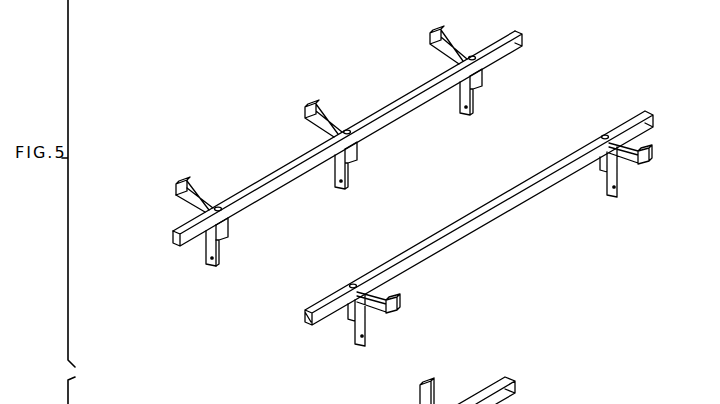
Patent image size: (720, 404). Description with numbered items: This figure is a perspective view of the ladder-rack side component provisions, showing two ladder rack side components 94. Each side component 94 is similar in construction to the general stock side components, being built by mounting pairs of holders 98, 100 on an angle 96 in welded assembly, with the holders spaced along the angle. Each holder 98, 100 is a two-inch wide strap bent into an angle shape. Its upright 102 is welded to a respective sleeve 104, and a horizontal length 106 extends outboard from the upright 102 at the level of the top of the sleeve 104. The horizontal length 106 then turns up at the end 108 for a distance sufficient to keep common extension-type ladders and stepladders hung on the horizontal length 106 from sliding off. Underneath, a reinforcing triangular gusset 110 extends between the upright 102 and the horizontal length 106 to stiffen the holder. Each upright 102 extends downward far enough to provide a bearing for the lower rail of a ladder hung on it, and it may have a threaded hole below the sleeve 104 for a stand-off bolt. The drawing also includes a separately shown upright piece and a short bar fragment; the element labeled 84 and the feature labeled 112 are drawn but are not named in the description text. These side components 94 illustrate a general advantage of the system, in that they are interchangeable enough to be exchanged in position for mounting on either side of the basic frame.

The upright plate 84 is at (430, 380).
The ladder rack side component 94 is at (260, 172).
The angle 96 is at (308, 152).
The holder 98 is at (202, 209).
The holder 100 is at (434, 30).
The upright 102 is at (209, 253).
The sleeve 104 is at (227, 228).
The horizontal length 106 is at (192, 206).
The end 108 is at (177, 181).
The reinforcing triangular gusset 110 is at (367, 318).
The hole 112 is at (238, 266).